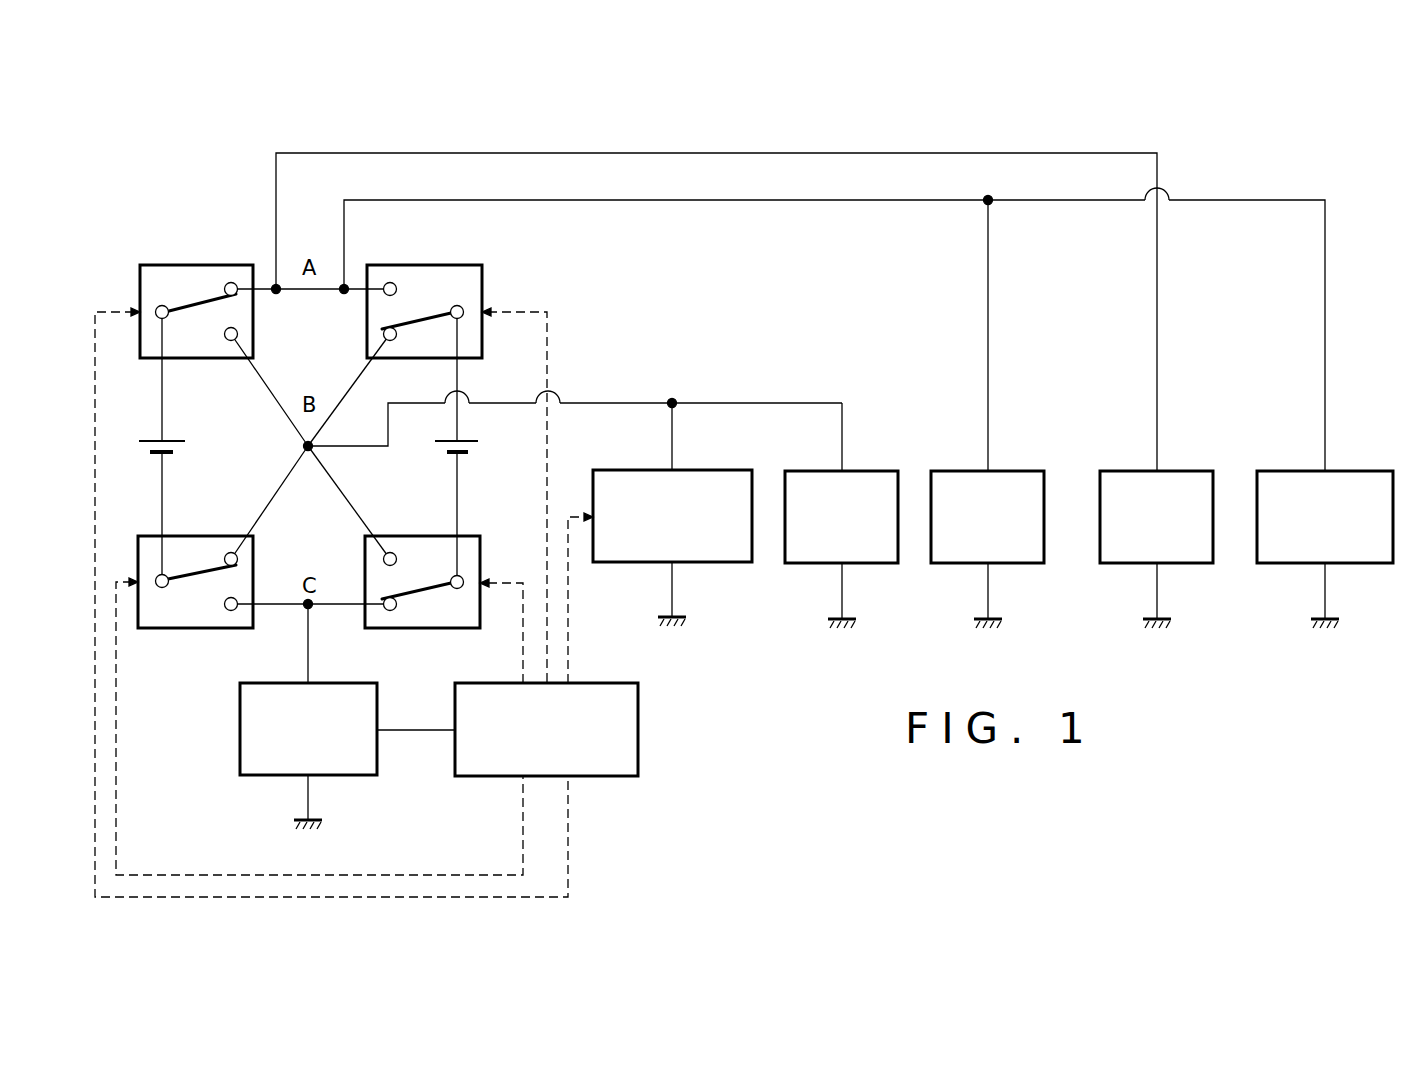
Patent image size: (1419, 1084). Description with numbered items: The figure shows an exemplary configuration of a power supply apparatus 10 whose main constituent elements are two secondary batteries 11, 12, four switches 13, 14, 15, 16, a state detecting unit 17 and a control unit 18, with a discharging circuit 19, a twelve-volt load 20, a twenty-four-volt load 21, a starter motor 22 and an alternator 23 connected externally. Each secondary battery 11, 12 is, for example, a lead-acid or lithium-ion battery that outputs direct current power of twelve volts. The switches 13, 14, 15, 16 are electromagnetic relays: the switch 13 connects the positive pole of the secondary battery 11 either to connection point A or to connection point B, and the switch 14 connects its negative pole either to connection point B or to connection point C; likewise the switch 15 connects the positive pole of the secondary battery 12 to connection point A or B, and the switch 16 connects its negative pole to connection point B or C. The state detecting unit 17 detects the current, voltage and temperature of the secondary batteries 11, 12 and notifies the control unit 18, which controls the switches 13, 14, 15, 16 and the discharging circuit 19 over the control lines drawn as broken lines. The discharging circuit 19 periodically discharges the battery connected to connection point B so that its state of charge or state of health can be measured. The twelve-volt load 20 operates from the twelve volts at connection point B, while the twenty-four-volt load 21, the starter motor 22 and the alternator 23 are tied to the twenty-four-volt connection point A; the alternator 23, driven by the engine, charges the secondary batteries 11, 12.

The power supply apparatus 10 is at (617, 141).
The secondary battery 11 is at (172, 441).
The secondary battery 12 is at (466, 441).
The switch 13 is at (187, 265).
The switch 14 is at (192, 536).
The switch 15 is at (413, 265).
The switch 16 is at (468, 536).
The state detecting unit 17 is at (337, 683).
The control unit 18 is at (597, 683).
The discharging circuit 19 is at (690, 470).
The 12V-load 20 is at (853, 471).
The 24V-load 21 is at (1010, 471).
The starter motor 22 is at (1170, 471).
The alternator 23 is at (1343, 471).